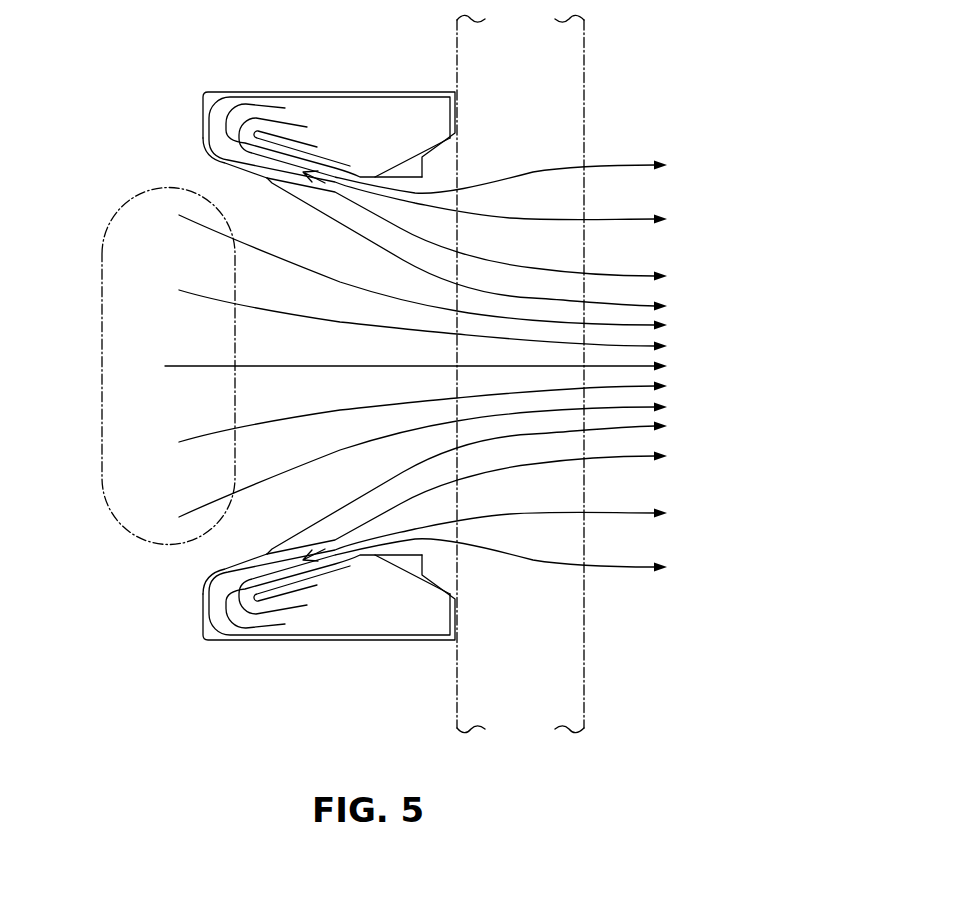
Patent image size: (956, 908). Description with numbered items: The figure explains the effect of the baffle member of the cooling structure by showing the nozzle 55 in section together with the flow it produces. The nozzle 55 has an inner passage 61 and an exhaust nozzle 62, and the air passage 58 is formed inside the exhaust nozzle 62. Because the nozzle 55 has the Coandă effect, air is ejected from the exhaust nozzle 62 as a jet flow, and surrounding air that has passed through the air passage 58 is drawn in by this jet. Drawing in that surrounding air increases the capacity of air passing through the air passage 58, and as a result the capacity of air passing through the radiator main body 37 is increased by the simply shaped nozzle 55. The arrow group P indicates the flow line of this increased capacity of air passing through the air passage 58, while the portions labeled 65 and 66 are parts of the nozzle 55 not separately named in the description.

The radiator main body 37 is at (584, 689).
The nozzle 55 is at (366, 170).
The air passage 58 is at (388, 180).
The inner passage 61 is at (388, 104).
The exhaust nozzle 62 is at (327, 183).
The outer wall 65 is at (240, 170).
The air passage 66 is at (323, 157).
The arrow group P is at (122, 546).